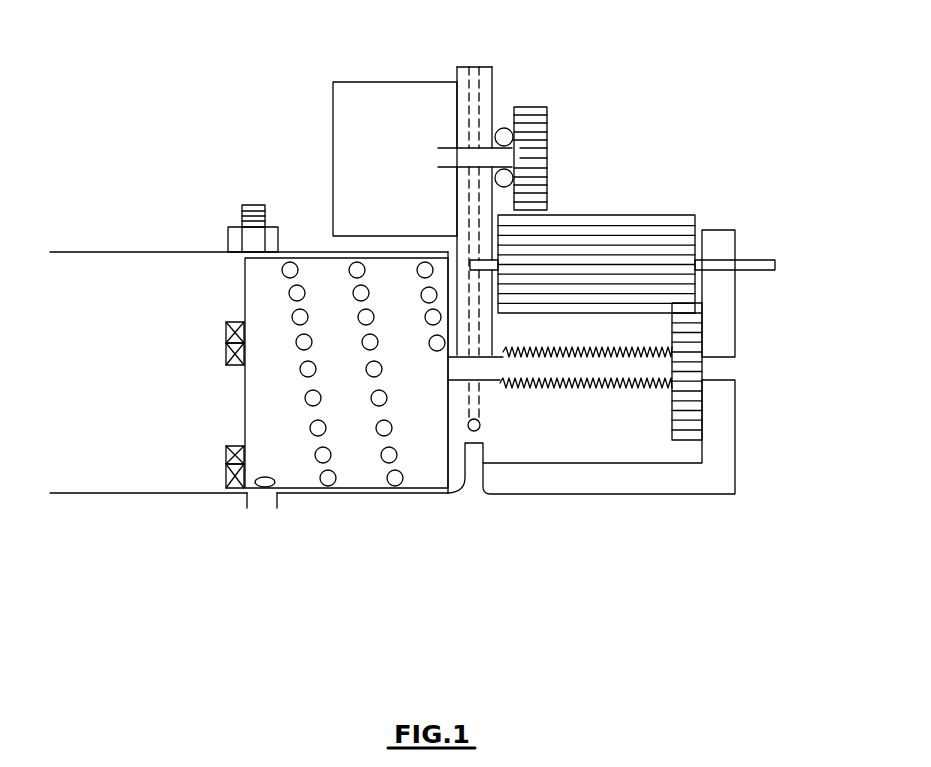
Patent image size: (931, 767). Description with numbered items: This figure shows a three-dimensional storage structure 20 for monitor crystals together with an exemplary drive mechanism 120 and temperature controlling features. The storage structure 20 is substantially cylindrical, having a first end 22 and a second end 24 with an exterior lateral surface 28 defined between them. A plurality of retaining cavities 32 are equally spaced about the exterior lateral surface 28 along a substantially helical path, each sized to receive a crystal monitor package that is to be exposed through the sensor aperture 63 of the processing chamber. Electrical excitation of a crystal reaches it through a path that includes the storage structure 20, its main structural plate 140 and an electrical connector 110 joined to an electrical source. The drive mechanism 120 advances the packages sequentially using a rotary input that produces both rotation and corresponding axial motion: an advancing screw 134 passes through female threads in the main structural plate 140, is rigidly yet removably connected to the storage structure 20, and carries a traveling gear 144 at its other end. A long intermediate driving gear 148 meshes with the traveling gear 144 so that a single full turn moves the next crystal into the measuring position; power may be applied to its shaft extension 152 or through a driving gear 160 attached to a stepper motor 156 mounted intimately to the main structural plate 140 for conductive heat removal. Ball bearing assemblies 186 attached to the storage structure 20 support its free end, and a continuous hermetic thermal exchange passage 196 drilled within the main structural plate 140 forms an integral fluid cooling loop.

The three-dimensional storage structure 20 is at (260, 276).
The first end 22 is at (257, 317).
The second end 24 is at (458, 473).
The exterior lateral surface 28 is at (357, 467).
The retaining cavities 32 is at (303, 341).
The sensor aperture 63 is at (258, 500).
The electrical connector 110 is at (254, 205).
The drive mechanism 120 is at (675, 113).
The advancing screw 134 is at (610, 368).
The main structural plate 140 is at (462, 67).
The traveling gear 144 is at (688, 428).
The intermediate driving gear 148 is at (663, 223).
The shaft extension 152 is at (755, 267).
The stepper motor 156 is at (358, 115).
The driving gear 160 is at (531, 107).
The ball bearing assemblies 186 is at (225, 352).
The thermal exchange passage 196 is at (473, 72).